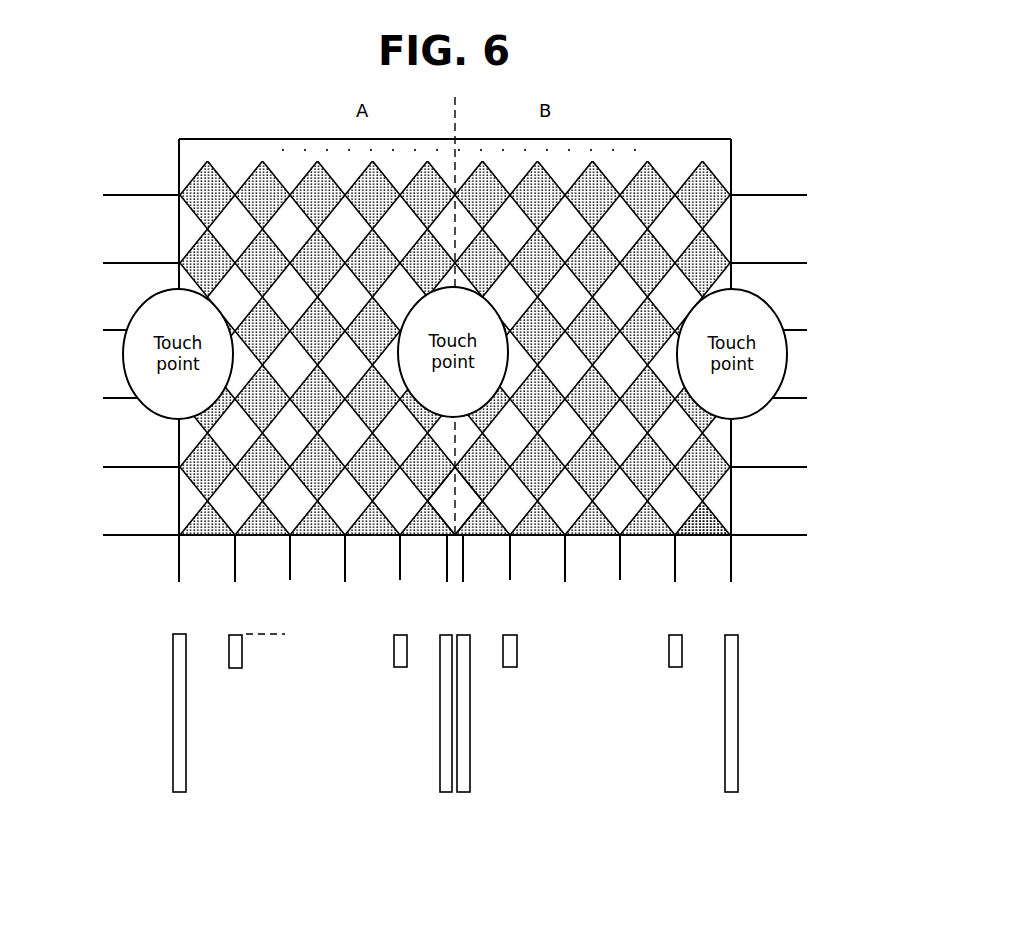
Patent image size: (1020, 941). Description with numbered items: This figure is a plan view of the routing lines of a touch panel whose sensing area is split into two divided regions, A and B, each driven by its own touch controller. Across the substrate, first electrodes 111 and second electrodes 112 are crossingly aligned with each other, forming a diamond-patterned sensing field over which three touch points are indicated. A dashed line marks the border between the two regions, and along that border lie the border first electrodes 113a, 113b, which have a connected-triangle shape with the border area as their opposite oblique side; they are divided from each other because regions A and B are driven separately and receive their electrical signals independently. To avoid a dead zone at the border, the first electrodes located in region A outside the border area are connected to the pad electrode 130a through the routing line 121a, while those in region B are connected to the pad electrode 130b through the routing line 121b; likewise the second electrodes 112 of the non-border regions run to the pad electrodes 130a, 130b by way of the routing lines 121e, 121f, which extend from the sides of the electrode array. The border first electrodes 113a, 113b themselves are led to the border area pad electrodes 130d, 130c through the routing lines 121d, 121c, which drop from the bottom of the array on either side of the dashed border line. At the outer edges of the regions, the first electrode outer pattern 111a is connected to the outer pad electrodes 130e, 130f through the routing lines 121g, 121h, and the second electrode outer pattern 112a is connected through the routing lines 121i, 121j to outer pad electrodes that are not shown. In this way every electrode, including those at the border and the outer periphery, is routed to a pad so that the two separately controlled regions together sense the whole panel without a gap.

The first electrode 111 is at (684, 509).
The first electrode outer pattern 111a is at (183, 497).
The second electrode 112 is at (732, 450).
The second electrode outer pattern 112a is at (702, 537).
The border first electrode 113a is at (438, 537).
The border first electrode 113b is at (471, 537).
The routing line 121a is at (235, 562).
The routing line 121b is at (672, 567).
The routing line 121c is at (463, 572).
The routing line 121d is at (447, 572).
The routing line 121e is at (122, 467).
The routing line 121f is at (792, 467).
The routing line 121g is at (179, 560).
The routing line 121h is at (735, 571).
The routing line 121i is at (122, 535).
The routing line 121j is at (792, 535).
The pad electrode 130a is at (236, 668).
The pad electrode 130b is at (669, 657).
The border area pad electrode 130c is at (465, 708).
The border area pad electrode 130d is at (447, 708).
The outer pad electrode 130e is at (178, 718).
The outer pad electrode 130f is at (725, 718).